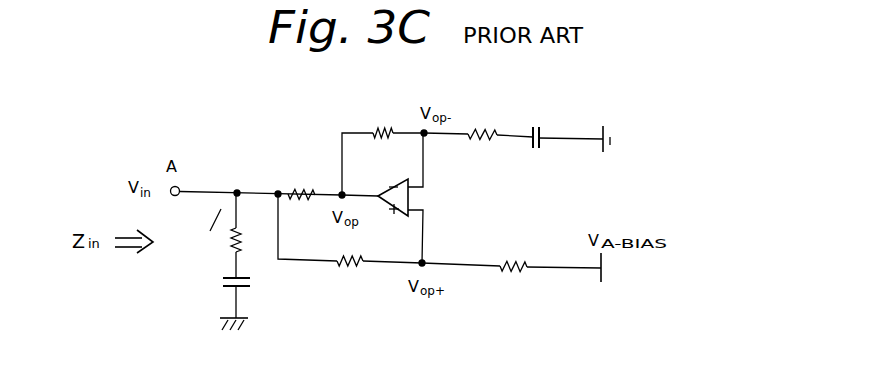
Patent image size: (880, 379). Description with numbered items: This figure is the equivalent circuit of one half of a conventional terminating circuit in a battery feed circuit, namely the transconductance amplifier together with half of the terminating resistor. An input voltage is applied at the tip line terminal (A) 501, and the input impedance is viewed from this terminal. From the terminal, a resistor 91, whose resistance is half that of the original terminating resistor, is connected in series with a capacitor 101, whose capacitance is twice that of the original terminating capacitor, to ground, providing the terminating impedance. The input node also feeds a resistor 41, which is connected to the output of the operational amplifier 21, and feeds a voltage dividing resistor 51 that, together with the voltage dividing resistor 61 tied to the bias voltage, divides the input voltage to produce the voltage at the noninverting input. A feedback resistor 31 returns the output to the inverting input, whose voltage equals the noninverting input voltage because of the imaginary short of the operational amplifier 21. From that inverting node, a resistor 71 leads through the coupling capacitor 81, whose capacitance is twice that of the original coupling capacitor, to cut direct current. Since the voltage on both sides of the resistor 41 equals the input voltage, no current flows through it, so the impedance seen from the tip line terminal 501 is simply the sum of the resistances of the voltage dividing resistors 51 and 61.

The tip line terminal (A) 501 is at (175, 196).
The resistor 91 is at (235, 254).
The capacitor 101 is at (247, 288).
The resistor 41 is at (305, 201).
The operational amplifier 21 is at (397, 182).
The feedback resistor 31 is at (373, 128).
The voltage dividing resistor 51 is at (350, 272).
The resistor 71 is at (482, 143).
The coupling capacitor 81 is at (535, 152).
The voltage dividing resistor 61 is at (513, 273).